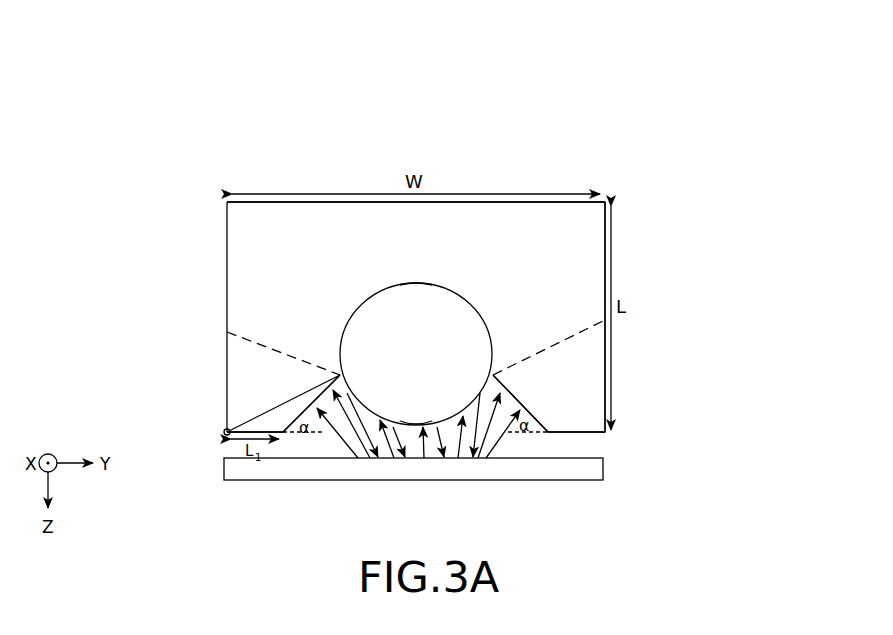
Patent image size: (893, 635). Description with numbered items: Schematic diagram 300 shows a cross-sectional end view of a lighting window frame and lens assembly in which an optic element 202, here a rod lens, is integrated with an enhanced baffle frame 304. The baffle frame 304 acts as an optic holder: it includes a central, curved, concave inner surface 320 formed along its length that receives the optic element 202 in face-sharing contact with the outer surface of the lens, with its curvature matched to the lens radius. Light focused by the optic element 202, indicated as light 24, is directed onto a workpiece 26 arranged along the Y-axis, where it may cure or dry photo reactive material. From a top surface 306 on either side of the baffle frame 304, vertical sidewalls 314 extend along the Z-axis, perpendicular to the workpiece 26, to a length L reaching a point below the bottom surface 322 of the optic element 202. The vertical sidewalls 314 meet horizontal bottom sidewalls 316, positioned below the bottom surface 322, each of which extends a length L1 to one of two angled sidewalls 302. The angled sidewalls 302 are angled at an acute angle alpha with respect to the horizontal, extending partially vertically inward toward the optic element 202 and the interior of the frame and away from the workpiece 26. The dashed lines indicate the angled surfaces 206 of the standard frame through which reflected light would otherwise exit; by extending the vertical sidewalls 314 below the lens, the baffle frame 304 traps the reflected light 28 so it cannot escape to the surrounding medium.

The schematic diagram 300 is at (684, 82).
The baffle frame 304 is at (316, 293).
The top surface 306 is at (292, 203).
The vertical sidewalls 314 is at (227, 236).
The bottom sidewalls 316 is at (226, 434).
The angled sidewalls 302 is at (320, 400).
The angled surfaces 206 is at (257, 342).
The optic element 202 is at (438, 367).
The inner surface 320 is at (418, 287).
The reflected light 28 is at (340, 442).
The light focused by the optic element 24 is at (478, 430).
The workpiece 26 is at (596, 469).
The bottom surface 322 is at (416, 430).